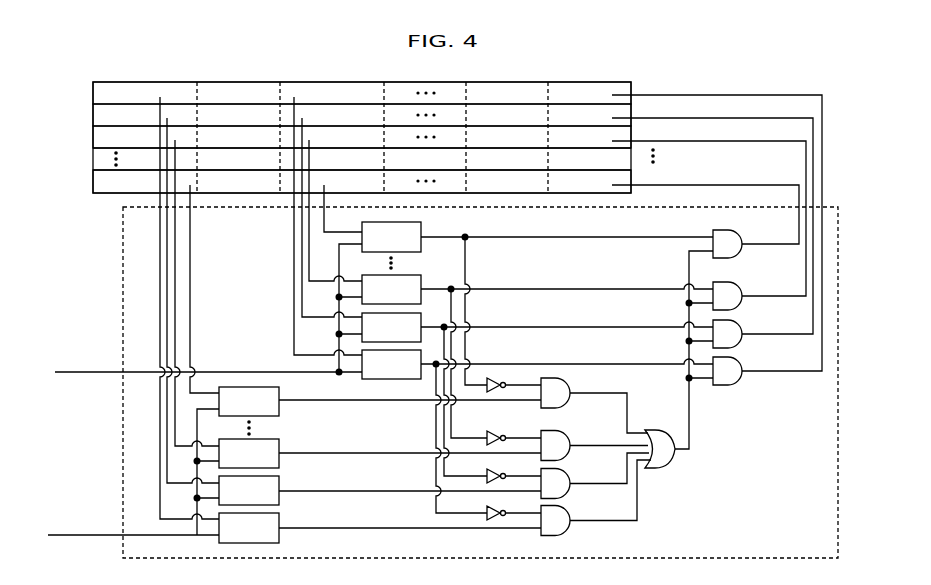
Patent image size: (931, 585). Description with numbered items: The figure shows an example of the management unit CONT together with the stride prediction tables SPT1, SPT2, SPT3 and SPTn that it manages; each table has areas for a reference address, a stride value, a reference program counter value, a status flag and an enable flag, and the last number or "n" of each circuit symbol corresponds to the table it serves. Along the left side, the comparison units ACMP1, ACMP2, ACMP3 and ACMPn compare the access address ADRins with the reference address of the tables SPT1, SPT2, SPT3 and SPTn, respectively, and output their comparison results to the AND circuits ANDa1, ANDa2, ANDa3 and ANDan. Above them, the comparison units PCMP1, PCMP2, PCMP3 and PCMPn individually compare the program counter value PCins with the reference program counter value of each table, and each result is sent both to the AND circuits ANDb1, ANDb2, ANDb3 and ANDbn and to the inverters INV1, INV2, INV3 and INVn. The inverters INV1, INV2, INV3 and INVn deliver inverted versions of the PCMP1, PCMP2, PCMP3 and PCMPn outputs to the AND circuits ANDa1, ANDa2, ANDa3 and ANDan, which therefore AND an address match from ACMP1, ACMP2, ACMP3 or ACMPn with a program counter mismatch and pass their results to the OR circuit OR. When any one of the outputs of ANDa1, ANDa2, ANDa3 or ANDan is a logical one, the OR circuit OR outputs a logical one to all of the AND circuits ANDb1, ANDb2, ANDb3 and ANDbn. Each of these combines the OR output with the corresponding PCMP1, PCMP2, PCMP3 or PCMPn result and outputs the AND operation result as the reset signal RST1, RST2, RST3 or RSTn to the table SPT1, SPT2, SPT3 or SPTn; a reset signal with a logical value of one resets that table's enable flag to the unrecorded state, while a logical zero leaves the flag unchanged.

The stride prediction table SPT1 is at (93, 93).
The stride prediction table SPT2 is at (93, 115).
The stride prediction table SPT3 is at (93, 137).
The stride prediction table SPTn is at (93, 181).
The reset signal RST1 is at (618, 88).
The reset signal RST2 is at (618, 110).
The reset signal RST3 is at (618, 132).
The reset signal RSTn is at (618, 176).
The management unit CONT is at (123, 227).
The program counter value PCins is at (207, 310).
The access address ADRins is at (133, 472).
The comparison unit ACMP1 is at (350, 320).
The comparison unit ACMP2 is at (354, 311).
The comparison unit ACMP3 is at (358, 304).
The comparison unit ACMPn is at (365, 300).
The comparison unit PCMP1 is at (503, 305).
The comparison unit PCMP2 is at (507, 297).
The comparison unit PCMP3 is at (511, 289).
The comparison unit PCMPn is at (518, 285).
The inverter INV1 is at (501, 500).
The inverter INV2 is at (501, 463).
The inverter INV3 is at (501, 425).
The inverter INVn is at (501, 372).
The AND circuit ANDa1 is at (573, 502).
The AND circuit ANDa2 is at (573, 465).
The AND circuit ANDa3 is at (573, 427).
The AND circuit ANDan is at (573, 374).
The OR circuit OR is at (668, 462).
The AND circuit ANDb1 is at (744, 354).
The AND circuit ANDb2 is at (744, 317).
The AND circuit ANDb3 is at (744, 279).
The AND circuit ANDbn is at (744, 227).